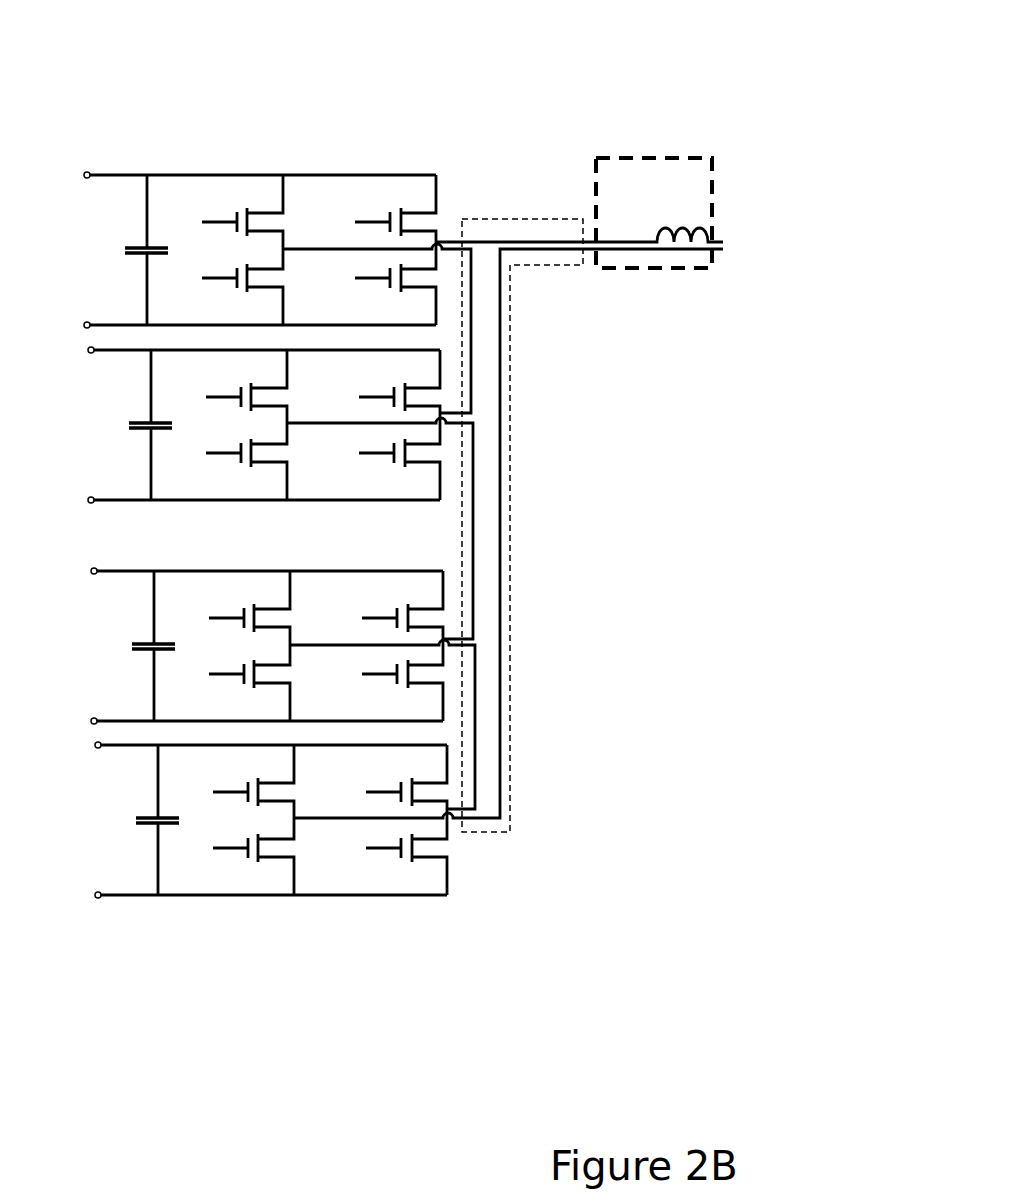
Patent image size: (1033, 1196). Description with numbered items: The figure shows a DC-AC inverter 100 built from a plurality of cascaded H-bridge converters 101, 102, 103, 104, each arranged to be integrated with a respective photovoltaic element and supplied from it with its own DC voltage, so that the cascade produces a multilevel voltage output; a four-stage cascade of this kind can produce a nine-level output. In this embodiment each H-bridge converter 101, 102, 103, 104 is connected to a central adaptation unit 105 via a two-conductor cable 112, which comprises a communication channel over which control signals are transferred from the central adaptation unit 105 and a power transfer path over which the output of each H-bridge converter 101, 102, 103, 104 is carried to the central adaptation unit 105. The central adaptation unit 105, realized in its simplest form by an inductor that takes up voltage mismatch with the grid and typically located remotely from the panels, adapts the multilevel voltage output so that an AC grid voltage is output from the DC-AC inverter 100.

The DC-AC inverter 100 is at (510, 77).
The H-bridge converter 101 is at (335, 170).
The H-bridge converter 102 is at (313, 502).
The H-bridge converter 103 is at (304, 551).
The H-bridge converter 104 is at (332, 898).
The central adaptation unit 105 is at (613, 158).
The two-conductor cable 112 is at (555, 265).